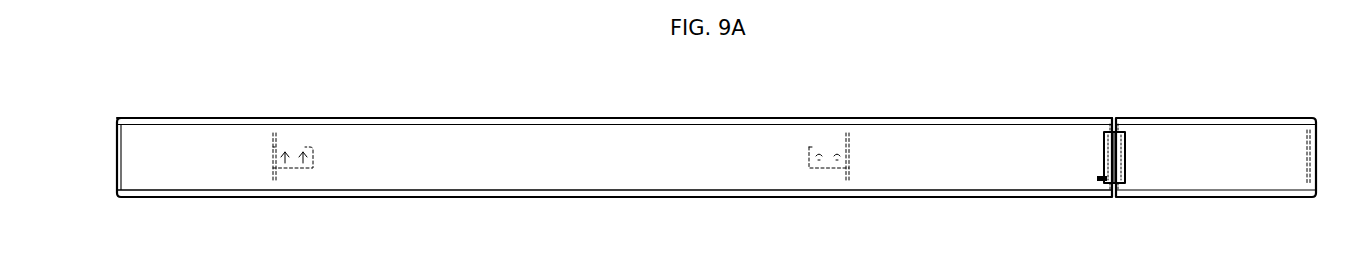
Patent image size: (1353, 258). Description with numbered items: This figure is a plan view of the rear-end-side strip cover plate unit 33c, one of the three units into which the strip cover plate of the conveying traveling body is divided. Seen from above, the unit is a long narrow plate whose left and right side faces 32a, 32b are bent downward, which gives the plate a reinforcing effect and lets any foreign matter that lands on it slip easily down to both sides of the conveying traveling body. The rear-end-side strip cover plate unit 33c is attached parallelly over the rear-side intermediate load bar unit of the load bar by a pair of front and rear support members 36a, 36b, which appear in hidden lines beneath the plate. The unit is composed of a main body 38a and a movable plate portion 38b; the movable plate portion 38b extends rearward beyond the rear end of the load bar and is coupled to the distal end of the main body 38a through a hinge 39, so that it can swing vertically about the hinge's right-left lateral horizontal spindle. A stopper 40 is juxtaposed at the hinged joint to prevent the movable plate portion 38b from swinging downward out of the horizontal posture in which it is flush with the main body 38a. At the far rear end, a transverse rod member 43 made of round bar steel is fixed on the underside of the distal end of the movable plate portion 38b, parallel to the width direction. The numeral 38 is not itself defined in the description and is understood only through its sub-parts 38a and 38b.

The left side face 32a is at (486, 197).
The right side face 32b is at (550, 122).
The rear-end-side strip cover plate unit 33c is at (472, 116).
The front support member 36a is at (273, 157).
The rear support member 36b is at (838, 153).
The beam 38 is at (1001, 253).
The main body 38a is at (967, 149).
The movable plate portion 38b is at (1200, 158).
The hinge 39 is at (1107, 152).
The stopper 40 is at (1099, 178).
The transverse rod member 43 is at (1310, 160).